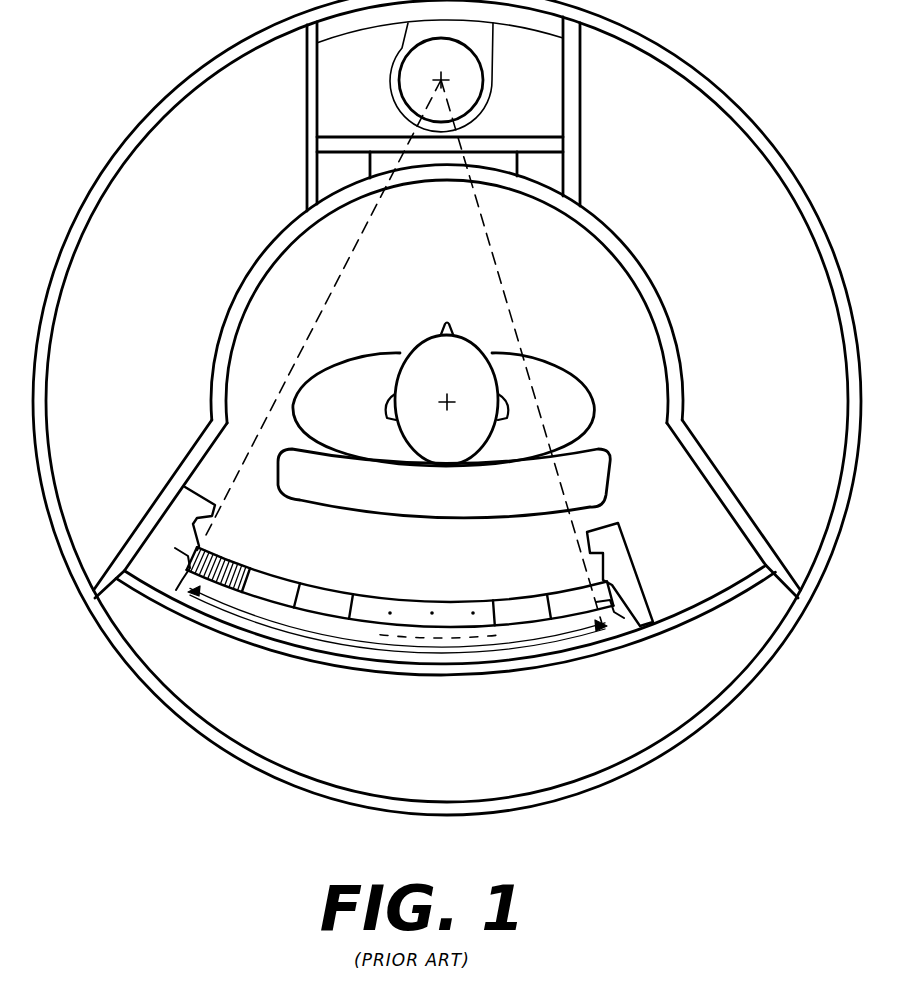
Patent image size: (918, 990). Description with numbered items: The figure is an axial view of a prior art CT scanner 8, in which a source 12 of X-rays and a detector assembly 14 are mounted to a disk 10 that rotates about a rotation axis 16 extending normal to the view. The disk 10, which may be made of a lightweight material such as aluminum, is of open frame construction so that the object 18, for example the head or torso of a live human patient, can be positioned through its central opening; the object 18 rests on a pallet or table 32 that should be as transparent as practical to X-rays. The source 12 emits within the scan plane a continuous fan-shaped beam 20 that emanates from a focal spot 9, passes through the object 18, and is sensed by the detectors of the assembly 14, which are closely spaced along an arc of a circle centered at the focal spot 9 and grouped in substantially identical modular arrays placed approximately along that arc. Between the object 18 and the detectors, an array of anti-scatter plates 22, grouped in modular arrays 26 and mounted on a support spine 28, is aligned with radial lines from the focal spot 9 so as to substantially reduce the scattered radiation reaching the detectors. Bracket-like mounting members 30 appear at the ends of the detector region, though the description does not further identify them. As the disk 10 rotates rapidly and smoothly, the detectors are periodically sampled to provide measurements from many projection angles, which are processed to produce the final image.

The scanner 8 is at (447, 407).
The focal spot 9 is at (443, 78).
The disk 10 is at (742, 108).
The source 12 is at (492, 91).
The detector assembly 14 is at (298, 623).
The rotation axis 16 is at (450, 396).
The object 18 is at (575, 383).
The fan-shaped beam 20 is at (515, 292).
The anti-scatter plates 22 is at (212, 550).
The modular arrays 26 is at (240, 563).
The support spine 28 is at (423, 655).
The mounting bracket 30 is at (185, 505).
The table 32 is at (610, 474).